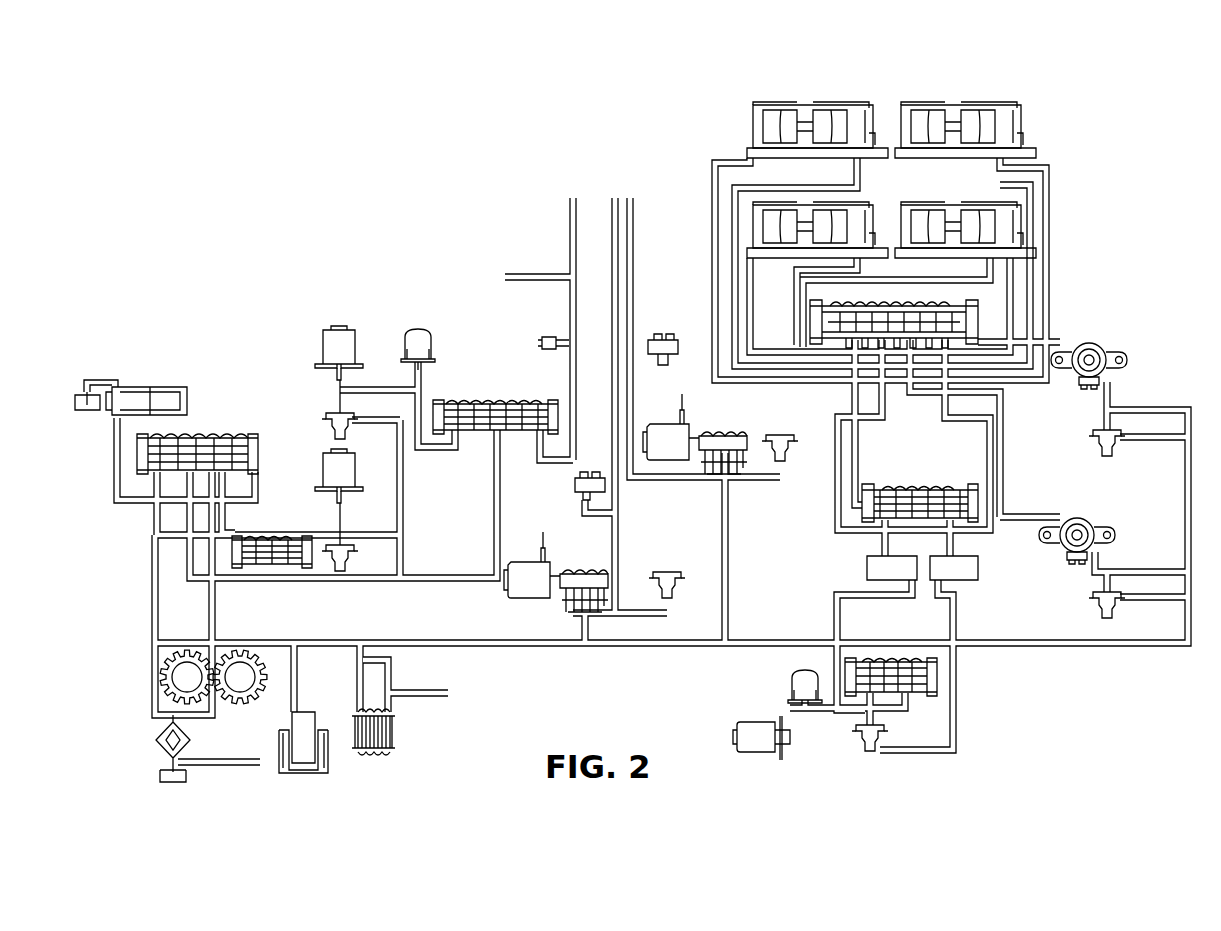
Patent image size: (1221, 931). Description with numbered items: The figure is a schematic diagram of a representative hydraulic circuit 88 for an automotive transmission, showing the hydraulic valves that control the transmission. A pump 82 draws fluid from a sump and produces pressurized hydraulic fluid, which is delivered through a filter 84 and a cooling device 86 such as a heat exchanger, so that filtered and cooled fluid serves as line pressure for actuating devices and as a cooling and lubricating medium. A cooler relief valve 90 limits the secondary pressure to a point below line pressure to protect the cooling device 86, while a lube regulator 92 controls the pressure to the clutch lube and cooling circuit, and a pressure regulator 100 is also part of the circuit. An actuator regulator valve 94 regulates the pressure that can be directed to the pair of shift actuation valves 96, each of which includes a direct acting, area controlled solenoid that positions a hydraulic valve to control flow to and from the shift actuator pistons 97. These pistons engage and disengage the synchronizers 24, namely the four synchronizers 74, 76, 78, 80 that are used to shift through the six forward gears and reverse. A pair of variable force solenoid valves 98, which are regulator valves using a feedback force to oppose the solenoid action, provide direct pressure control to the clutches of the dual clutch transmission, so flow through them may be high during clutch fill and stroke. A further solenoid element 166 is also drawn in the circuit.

The synchronizers 24 is at (951, 72).
The synchronizer 74 is at (774, 237).
The synchronizer 76 is at (924, 228).
The synchronizer 78 is at (786, 126).
The synchronizer 80 is at (970, 126).
The pump 82 is at (138, 669).
The filter 84 is at (156, 739).
The cooling device 86 is at (396, 731).
The hydraulic circuit 88 is at (394, 250).
The cooler relief valve 90 is at (271, 533).
The lube regulator 92 is at (490, 396).
The actuator regulator valve 94 is at (892, 666).
The shift actuation valve 96 is at (866, 569).
The shift actuator pistons 97 is at (986, 308).
The variable force solenoid valve 98 is at (715, 440).
The pressure regulator 100 is at (212, 430).
The solenoid 166 is at (324, 454).